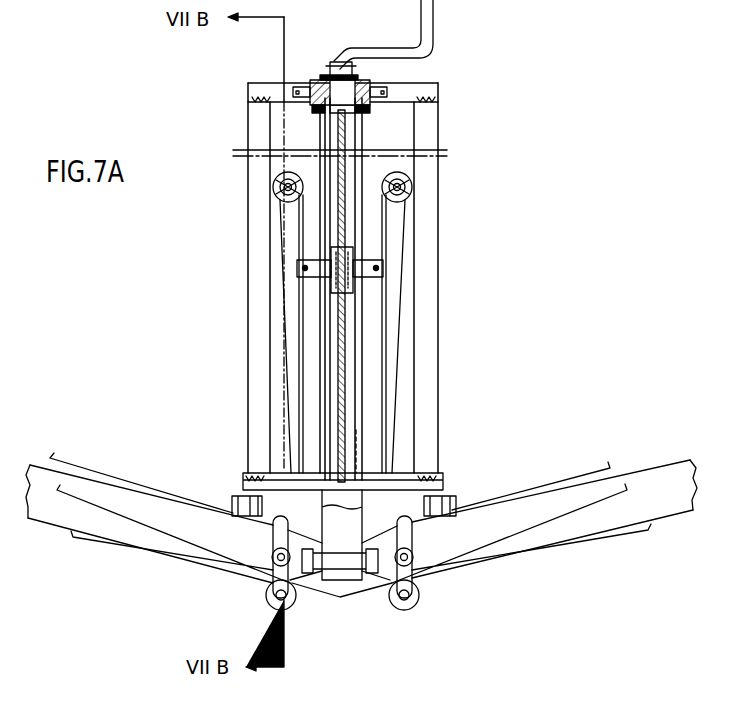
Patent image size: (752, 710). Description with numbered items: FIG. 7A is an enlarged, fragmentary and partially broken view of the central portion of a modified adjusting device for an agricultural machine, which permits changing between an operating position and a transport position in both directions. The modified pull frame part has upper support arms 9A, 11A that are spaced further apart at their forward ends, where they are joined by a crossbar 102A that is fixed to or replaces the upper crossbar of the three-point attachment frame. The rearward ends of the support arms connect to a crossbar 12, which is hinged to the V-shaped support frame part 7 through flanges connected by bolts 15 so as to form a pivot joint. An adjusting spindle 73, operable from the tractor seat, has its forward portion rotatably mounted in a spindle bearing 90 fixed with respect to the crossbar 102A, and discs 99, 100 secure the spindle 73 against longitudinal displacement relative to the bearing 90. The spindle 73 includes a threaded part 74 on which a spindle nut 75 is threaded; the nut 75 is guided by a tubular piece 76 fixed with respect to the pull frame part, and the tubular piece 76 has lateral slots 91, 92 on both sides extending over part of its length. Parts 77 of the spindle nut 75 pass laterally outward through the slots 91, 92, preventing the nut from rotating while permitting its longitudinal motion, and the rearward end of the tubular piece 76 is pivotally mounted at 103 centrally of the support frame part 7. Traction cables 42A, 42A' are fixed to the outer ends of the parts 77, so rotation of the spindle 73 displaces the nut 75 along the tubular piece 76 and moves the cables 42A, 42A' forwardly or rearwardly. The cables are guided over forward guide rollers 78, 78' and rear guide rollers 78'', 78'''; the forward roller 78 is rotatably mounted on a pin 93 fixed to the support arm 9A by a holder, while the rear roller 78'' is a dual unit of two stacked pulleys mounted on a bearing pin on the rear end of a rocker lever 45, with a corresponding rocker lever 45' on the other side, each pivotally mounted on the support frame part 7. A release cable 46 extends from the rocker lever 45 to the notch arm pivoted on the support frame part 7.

The support frame part 7 is at (676, 510).
The upper support arm 9A is at (254, 221).
The upper support arm 11A is at (428, 233).
The crossbar 12 is at (258, 476).
The bolt 15 is at (242, 494).
The traction cable 42A is at (180, 404).
The traction cable 42A' is at (516, 396).
The rocker lever 45 is at (251, 576).
The rocker lever 45' is at (441, 576).
The release cable 46 is at (137, 490).
The adjusting spindle 73 is at (444, 28).
The threaded part 74 is at (345, 222).
The spindle nut 75 is at (358, 289).
The tubular piece 76 is at (363, 137).
The parts of the spindle nut 77 is at (300, 252).
The forward guide roller 78 is at (245, 155).
The rear guide roller 78' is at (440, 174).
The rear guide roller 78'' is at (297, 614).
The rear guide roller 78''' is at (405, 614).
The spindle bearing 90 is at (320, 82).
The slot 91 is at (324, 398).
The slot 92 is at (360, 425).
The pin 93 is at (273, 188).
The disc 99 is at (331, 64).
The disc 100 is at (293, 90).
The crossbar 102A is at (250, 90).
The pivot mounting 103 is at (374, 592).